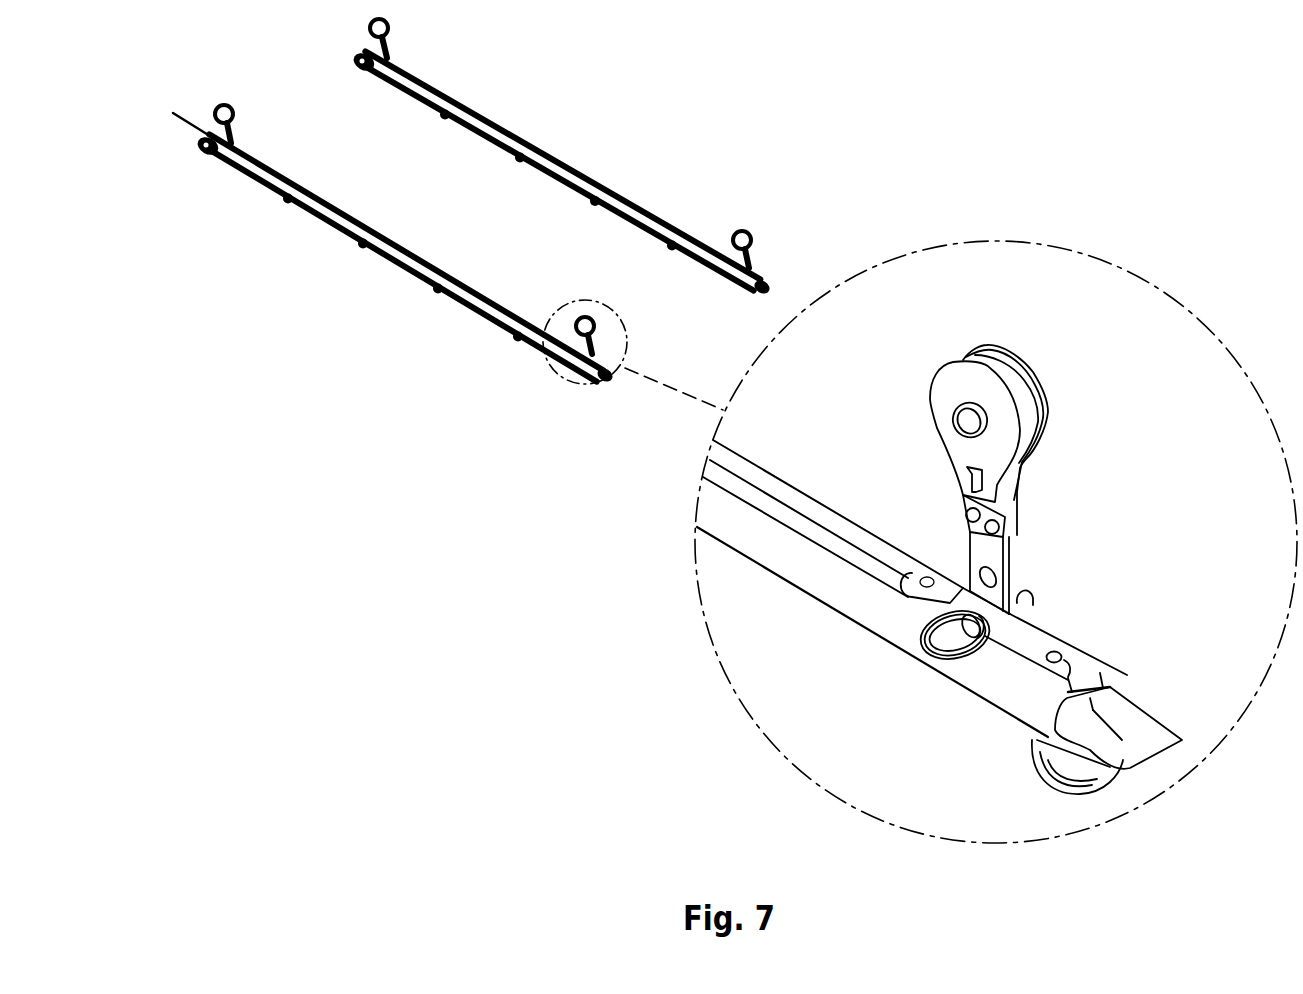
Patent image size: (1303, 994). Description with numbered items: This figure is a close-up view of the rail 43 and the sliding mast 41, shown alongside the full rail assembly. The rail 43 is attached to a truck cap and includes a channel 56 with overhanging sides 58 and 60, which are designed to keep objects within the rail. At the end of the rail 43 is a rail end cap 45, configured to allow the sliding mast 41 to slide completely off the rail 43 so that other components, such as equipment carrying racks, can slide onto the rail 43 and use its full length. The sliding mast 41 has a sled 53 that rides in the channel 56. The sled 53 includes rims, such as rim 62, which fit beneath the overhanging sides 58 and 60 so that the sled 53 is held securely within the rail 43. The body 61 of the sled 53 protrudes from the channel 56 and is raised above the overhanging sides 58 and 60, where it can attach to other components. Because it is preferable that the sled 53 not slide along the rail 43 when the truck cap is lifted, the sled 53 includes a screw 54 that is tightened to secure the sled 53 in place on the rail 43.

The sliding mast 41 is at (912, 456).
The rail 43 is at (783, 557).
The rail end cap 45 is at (1150, 722).
The sled 53 is at (1052, 618).
The screw 54 is at (930, 578).
The channel 56 is at (781, 513).
The overhanging side 58 is at (1098, 682).
The overhanging side 60 is at (1062, 694).
The body 61 is at (945, 600).
The rim 62 is at (1074, 668).